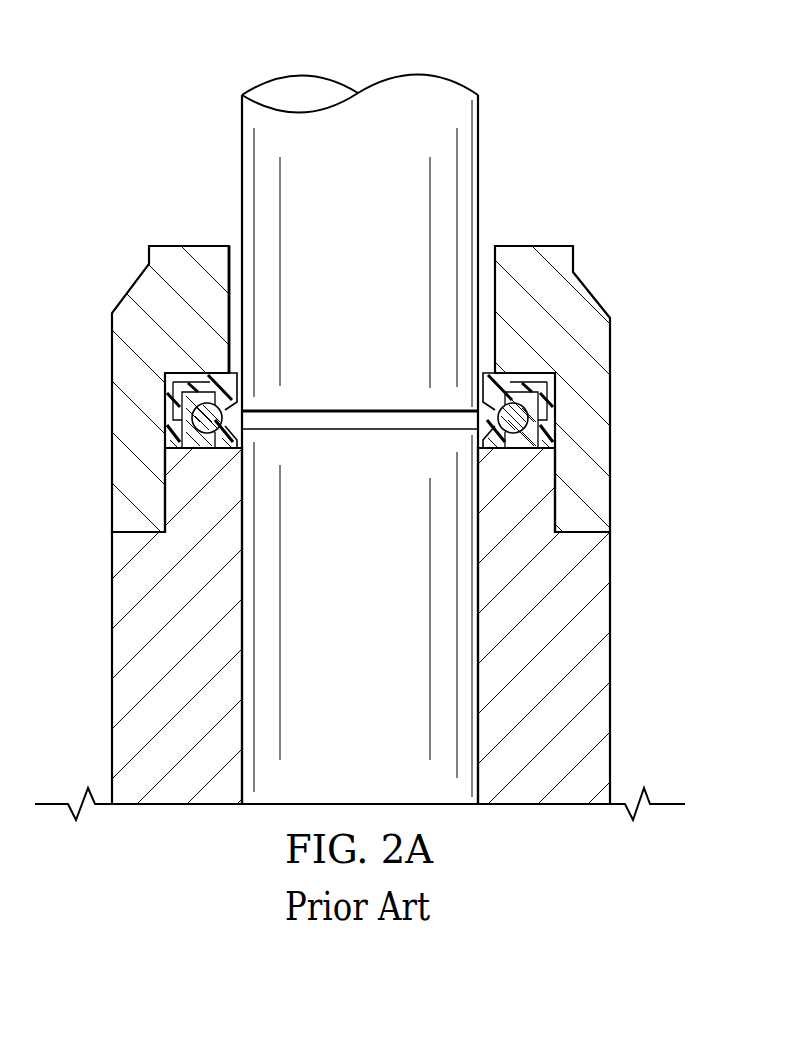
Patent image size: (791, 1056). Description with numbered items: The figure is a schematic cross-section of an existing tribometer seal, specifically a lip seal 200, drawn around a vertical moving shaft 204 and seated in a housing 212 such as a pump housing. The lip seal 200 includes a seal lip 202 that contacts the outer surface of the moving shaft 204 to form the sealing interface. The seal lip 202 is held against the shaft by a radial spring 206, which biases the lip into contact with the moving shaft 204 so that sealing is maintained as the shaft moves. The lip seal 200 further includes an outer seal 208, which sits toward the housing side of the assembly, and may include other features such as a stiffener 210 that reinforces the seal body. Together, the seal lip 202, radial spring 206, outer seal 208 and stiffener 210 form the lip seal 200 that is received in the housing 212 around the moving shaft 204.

The lip seal 200 is at (130, 83).
The seal lip 202 is at (476, 420).
The moving shaft 204 is at (470, 693).
The radial spring 206 is at (167, 435).
The outer seal 208 is at (165, 388).
The stiffener 210 is at (173, 368).
The housing 212 is at (600, 390).